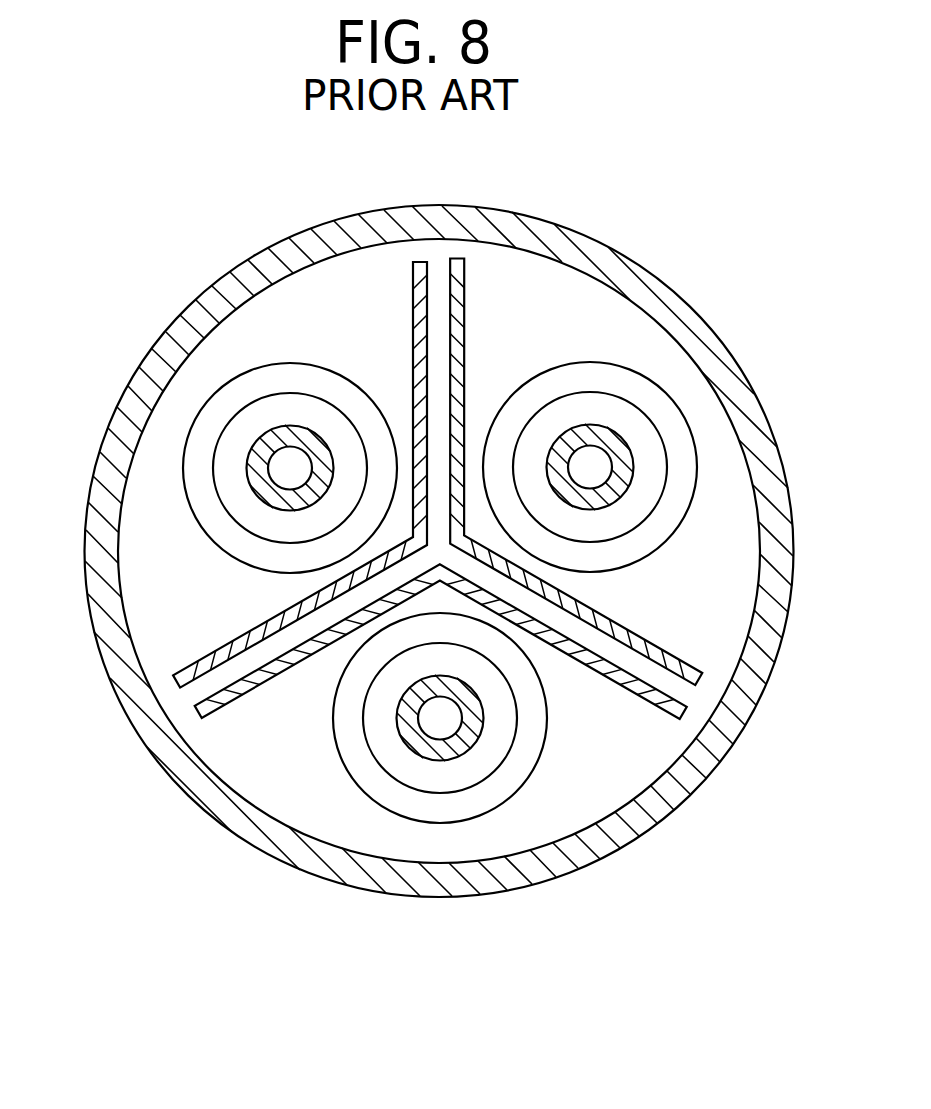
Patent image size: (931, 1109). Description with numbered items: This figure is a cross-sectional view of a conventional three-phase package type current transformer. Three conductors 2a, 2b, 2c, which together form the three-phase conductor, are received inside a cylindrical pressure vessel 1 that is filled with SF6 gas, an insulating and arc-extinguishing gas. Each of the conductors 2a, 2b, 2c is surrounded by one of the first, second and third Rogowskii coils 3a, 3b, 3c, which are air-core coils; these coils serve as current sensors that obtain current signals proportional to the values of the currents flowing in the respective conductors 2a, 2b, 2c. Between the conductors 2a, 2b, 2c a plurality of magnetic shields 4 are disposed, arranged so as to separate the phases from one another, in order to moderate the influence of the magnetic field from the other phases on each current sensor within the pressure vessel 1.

The pressure vessel 1 is at (779, 449).
The conductor 2a is at (247, 468).
The conductor 2b is at (467, 747).
The conductor 2c is at (614, 428).
The first Rogowskii coil 3a is at (248, 368).
The second Rogowskii coil 3b is at (353, 780).
The third Rogowskii coil 3c is at (589, 363).
The magnetic shield 4 is at (412, 313).